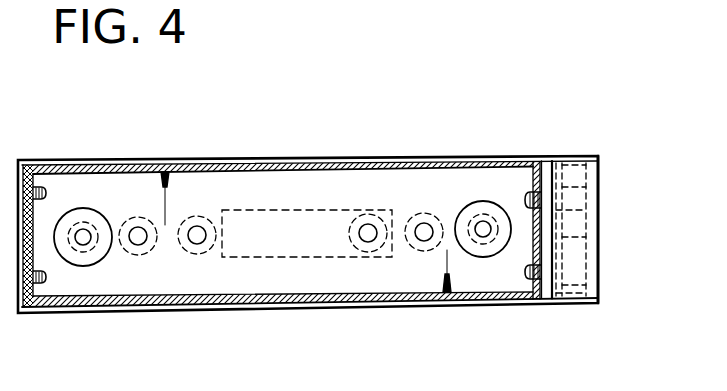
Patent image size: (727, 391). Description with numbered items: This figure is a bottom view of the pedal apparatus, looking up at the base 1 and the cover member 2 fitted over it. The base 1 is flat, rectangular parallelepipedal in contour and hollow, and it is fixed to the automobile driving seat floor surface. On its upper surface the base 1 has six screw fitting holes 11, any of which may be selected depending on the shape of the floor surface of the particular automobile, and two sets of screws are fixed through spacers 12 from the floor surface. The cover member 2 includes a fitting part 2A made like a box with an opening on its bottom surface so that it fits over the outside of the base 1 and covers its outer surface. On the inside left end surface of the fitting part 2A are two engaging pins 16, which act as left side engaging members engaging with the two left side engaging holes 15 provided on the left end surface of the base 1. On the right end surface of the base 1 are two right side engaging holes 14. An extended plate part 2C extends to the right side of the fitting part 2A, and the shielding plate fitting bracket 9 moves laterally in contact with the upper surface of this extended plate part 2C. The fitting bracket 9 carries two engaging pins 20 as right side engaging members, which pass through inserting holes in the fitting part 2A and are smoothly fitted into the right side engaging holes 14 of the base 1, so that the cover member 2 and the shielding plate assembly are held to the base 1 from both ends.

The base 1 is at (422, 178).
The cover member 2 is at (305, 158).
The fitting part 2A is at (282, 308).
The extended plate part 2C is at (600, 192).
The shielding plate fitting bracket 9 is at (587, 241).
The screw fitting holes 11 is at (193, 243).
The spacers 12 is at (70, 263).
The right side engaging holes 14 is at (537, 291).
The left side engaging holes 15 is at (40, 170).
The engaging pins 16 is at (47, 192).
The engaging pins 20 is at (527, 268).